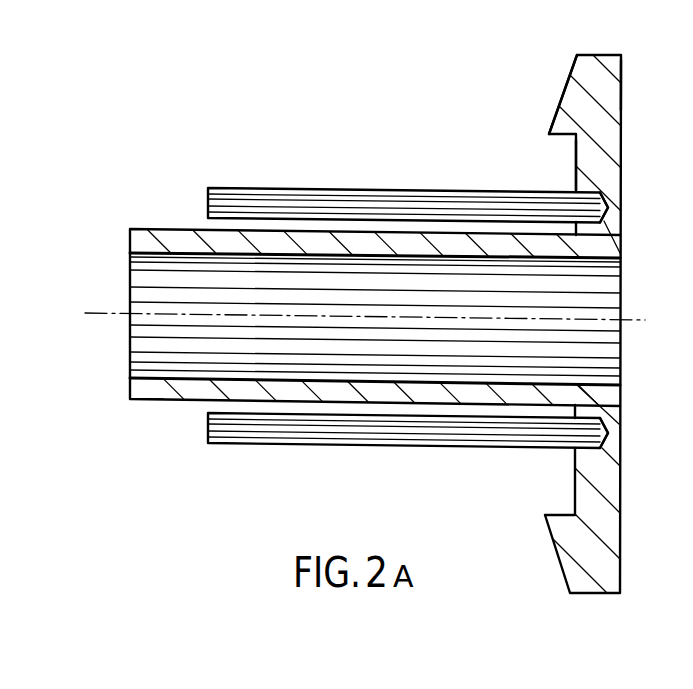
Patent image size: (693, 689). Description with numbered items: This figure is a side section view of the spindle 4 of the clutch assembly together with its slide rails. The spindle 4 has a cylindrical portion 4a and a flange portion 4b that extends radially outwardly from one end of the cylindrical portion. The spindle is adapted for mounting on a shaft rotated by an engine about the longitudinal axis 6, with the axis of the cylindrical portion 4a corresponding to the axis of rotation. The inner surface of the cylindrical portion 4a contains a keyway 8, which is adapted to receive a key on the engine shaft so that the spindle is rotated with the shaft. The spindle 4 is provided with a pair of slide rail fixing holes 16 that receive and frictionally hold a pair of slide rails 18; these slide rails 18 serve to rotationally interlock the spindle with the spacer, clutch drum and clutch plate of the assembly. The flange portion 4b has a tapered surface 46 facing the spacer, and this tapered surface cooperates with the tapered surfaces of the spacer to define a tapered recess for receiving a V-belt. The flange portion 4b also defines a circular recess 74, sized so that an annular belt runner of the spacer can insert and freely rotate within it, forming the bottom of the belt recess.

The spindle 4 is at (623, 395).
The cylindrical portion 4a is at (142, 393).
The flange portion 4b is at (621, 82).
The longitudinal axis 6 is at (100, 315).
The keyway 8 is at (138, 303).
The slide rail fixing holes 16 is at (598, 192).
The slide rails 18 is at (313, 190).
The tapered surface 46 is at (567, 83).
The circular recess 74 is at (576, 167).